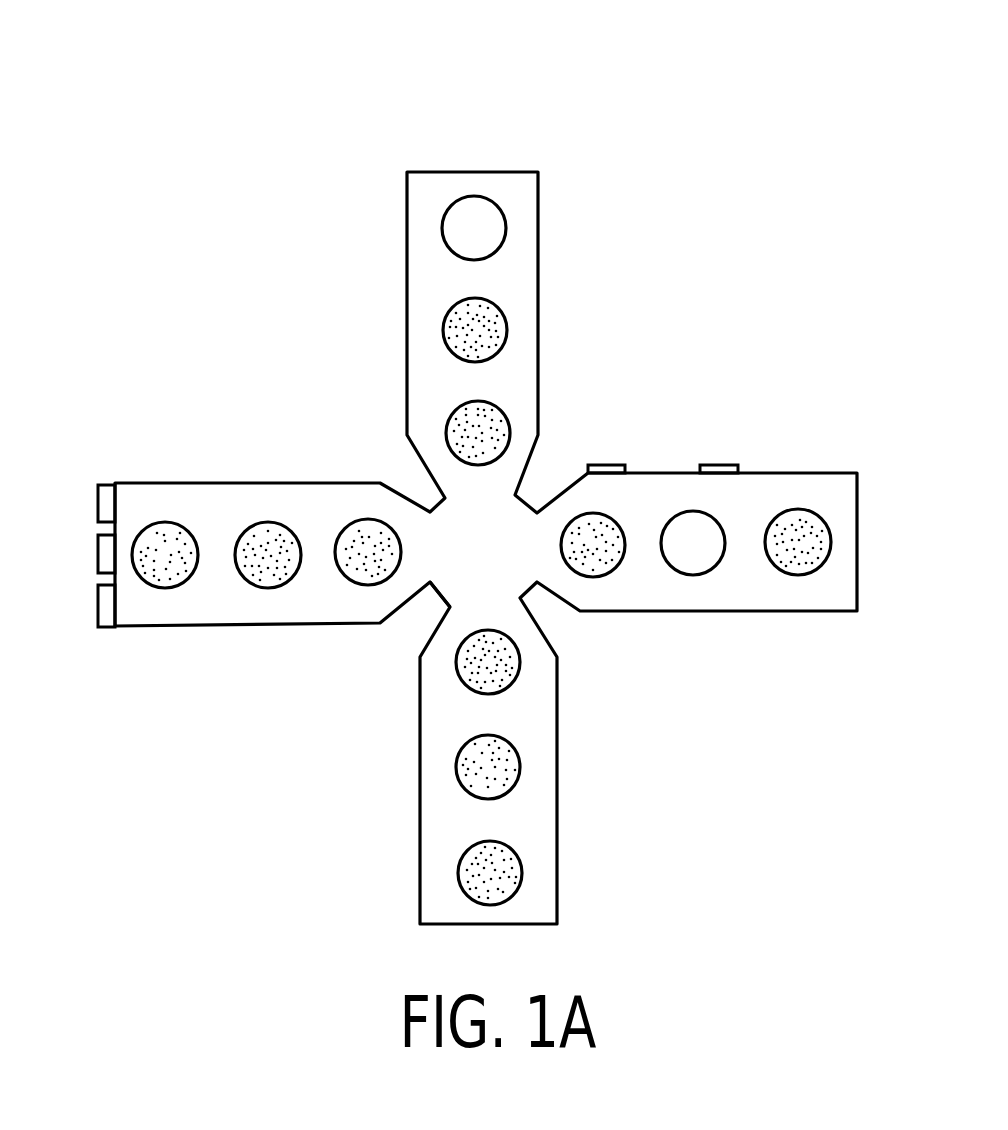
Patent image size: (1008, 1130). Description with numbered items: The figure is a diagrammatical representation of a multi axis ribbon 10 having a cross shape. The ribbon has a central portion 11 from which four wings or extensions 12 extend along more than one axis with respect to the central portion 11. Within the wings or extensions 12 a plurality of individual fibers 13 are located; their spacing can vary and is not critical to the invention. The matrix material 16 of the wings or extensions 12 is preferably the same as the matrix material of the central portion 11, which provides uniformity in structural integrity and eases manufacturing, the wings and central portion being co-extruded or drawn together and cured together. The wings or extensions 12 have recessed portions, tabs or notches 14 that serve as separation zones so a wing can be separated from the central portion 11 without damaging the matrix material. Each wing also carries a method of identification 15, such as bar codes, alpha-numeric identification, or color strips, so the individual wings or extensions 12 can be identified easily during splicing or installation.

The multi axis ribbon 10 is at (475, 124).
The central portion 11 is at (489, 550).
The wings or extensions 12 is at (418, 363).
The individual fibers 13 is at (522, 873).
The recessed portions, tabs or notches 14 is at (448, 606).
The method of identification 15 is at (720, 465).
The matrix material 16 is at (407, 225).